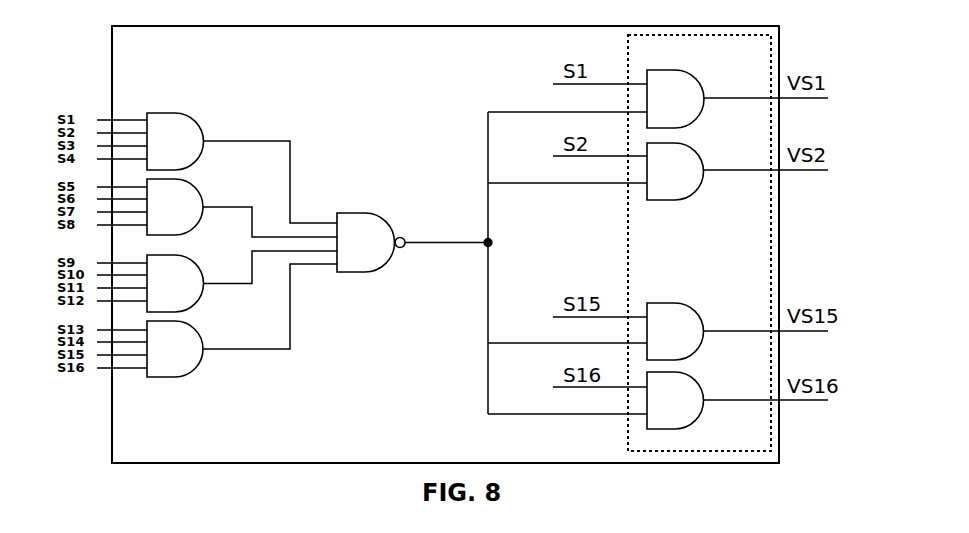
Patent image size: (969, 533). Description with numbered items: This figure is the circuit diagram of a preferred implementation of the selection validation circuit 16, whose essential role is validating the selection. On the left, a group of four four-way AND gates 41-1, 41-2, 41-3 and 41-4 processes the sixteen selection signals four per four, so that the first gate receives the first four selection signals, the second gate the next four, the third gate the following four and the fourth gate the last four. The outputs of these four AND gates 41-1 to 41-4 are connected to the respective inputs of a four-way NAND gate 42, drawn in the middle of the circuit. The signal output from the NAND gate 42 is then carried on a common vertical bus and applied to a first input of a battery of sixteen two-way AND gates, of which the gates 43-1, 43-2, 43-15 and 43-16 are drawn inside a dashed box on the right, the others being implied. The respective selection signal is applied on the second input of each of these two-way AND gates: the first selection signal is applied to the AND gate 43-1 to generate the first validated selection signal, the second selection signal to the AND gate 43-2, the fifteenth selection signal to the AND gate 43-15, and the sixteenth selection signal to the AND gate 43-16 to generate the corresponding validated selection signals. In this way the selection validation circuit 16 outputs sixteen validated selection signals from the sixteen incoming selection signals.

The selection validation circuit 16 is at (811, 48).
The four-way AND gate 41-1 is at (199, 119).
The four-way AND gate 41-2 is at (199, 185).
The four-way AND gate 41-3 is at (199, 303).
The four-way AND gate 41-4 is at (199, 368).
The four-way NAND gate 42 is at (383, 221).
The two-way AND gate 43-1 is at (698, 76).
The two-way AND gate 43-2 is at (698, 149).
The two-way AND gate 43-15 is at (698, 346).
The two-way AND gate 43-16 is at (698, 414).